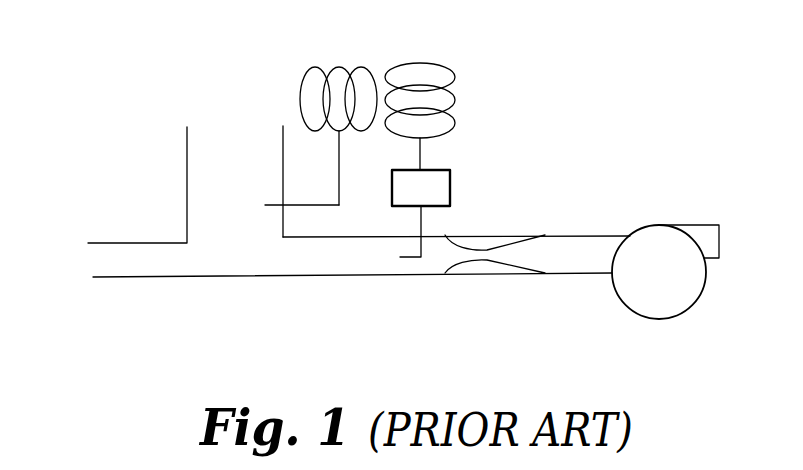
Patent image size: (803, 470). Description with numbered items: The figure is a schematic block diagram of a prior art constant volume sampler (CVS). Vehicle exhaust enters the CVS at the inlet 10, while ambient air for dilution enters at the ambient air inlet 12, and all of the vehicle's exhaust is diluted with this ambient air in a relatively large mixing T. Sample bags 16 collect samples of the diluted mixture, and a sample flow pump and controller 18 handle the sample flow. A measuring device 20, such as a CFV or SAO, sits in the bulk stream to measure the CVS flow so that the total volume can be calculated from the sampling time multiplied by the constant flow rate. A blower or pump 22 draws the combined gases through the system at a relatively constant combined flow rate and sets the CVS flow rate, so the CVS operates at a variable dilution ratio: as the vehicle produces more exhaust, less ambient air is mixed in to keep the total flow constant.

The inlet 10 is at (122, 278).
The ambient air inlet 12 is at (255, 135).
The sample bags 16 is at (472, 95).
The sample flow pump and controller 18 is at (348, 60).
The measuring device 20 is at (484, 274).
The blower or pump 22 is at (632, 313).